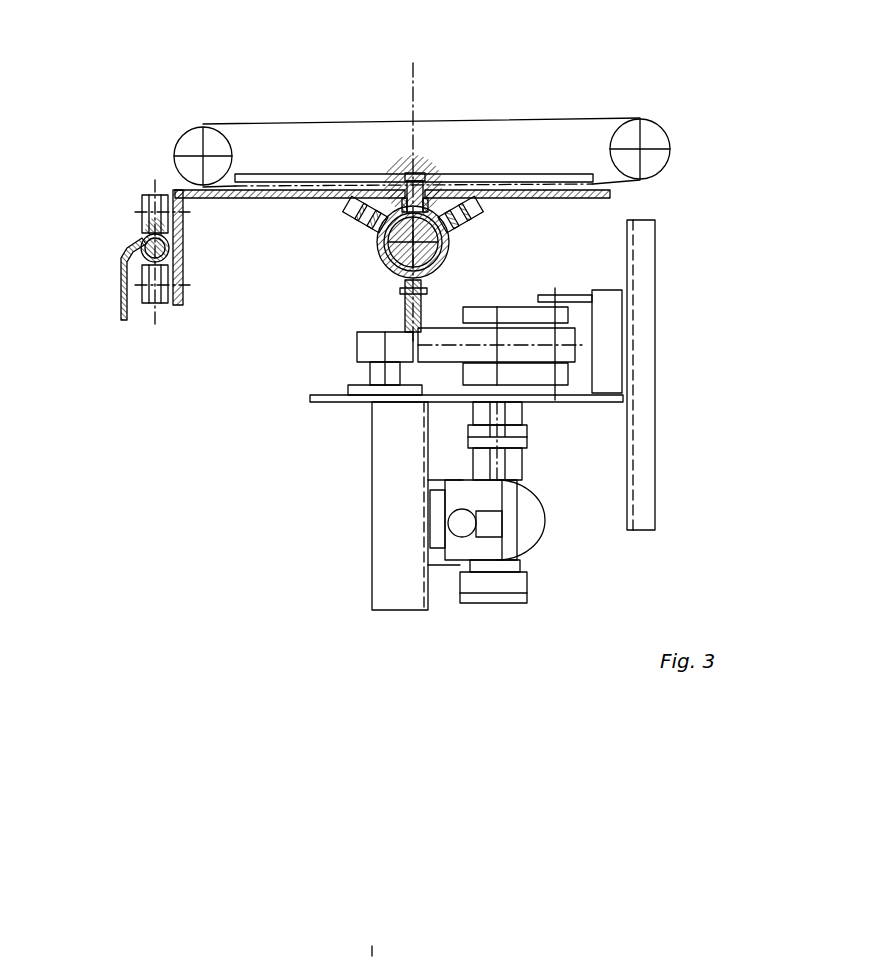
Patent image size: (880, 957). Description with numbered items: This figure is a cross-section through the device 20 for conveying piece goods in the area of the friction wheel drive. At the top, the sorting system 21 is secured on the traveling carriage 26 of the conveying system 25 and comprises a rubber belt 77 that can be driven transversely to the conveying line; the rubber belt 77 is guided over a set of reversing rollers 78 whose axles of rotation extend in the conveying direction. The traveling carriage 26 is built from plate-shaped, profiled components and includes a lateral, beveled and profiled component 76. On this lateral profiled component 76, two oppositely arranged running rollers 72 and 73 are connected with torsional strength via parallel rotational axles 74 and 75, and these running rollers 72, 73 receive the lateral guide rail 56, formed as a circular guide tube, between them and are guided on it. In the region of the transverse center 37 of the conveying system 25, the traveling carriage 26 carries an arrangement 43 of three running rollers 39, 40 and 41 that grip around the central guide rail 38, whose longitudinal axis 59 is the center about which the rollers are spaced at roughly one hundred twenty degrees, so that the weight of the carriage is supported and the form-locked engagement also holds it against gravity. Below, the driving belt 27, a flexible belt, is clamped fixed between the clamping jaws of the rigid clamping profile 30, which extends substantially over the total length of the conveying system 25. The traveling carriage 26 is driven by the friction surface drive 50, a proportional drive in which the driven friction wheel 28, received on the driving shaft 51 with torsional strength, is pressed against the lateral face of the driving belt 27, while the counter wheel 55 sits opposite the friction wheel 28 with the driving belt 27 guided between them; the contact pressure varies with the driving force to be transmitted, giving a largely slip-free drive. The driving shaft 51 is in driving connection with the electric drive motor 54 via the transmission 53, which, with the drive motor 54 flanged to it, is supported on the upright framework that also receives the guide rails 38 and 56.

The device 20 is at (603, 62).
The sorting system 21 is at (482, 113).
The conveying system 25 is at (262, 222).
The traveling carriage 26 is at (498, 199).
The driving belt 27 is at (416, 362).
The driven friction wheel 28 is at (566, 334).
The rigid clamping profile 30 is at (400, 306).
The transverse center 37 is at (413, 77).
The central guide rail 38 is at (448, 228).
The running roller 39 is at (414, 176).
The running roller 40 is at (348, 282).
The running roller 41 is at (484, 268).
The arrangement 43 is at (400, 229).
The friction surface drive 50 is at (598, 430).
The driving shaft 51 is at (421, 946).
The transmission 53 is at (508, 444).
The electric drive motor 54 is at (520, 536).
The counter wheel 55 is at (358, 352).
The lateral guide rail 56 is at (143, 244).
The longitudinal axis 59 is at (413, 242).
The running roller 72 is at (154, 192).
The running roller 73 is at (153, 312).
The rotational axle 74 is at (143, 208).
The rotational axle 75 is at (128, 298).
The lateral profiled component 76 is at (184, 240).
The rubber belt 77 is at (265, 122).
The reversing roller 78 is at (192, 140).